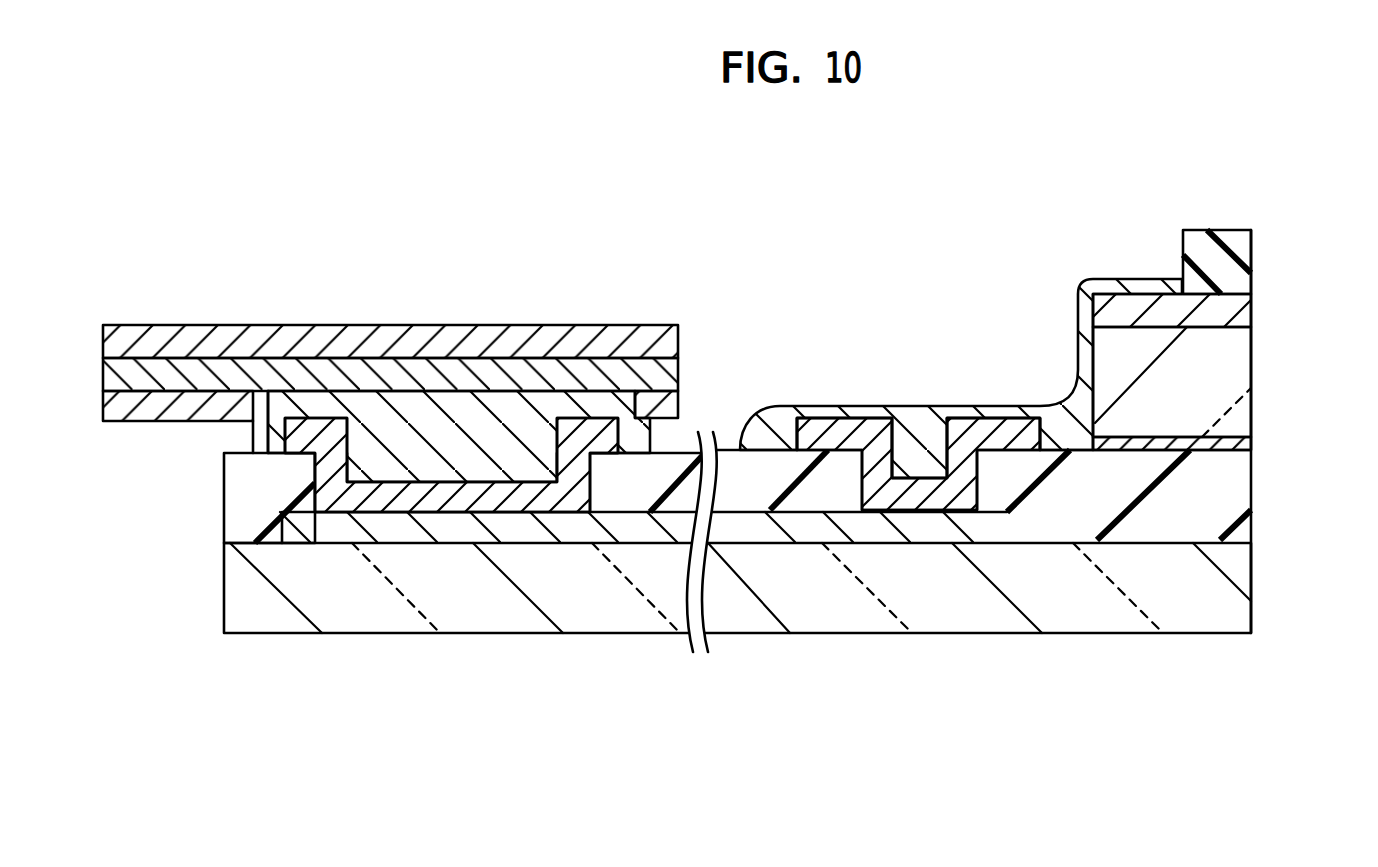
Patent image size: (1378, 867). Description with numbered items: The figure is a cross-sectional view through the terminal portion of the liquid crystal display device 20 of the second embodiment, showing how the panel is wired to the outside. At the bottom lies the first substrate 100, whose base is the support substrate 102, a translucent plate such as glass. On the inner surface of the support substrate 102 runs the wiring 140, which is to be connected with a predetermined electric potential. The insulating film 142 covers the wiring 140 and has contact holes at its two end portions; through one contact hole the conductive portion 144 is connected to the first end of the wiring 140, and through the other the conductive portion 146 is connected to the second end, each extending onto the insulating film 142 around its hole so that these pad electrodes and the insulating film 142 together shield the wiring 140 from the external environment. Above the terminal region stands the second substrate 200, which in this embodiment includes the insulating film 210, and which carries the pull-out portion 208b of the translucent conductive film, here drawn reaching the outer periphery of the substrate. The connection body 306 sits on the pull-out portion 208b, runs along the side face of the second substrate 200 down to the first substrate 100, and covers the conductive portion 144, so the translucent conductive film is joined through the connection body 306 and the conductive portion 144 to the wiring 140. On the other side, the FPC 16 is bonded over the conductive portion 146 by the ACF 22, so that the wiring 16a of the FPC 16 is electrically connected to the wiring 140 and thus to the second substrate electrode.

The liquid crystal display device 20 is at (390, 287).
The FPC 16 is at (390, 319).
The wiring of the FPC 16a is at (308, 368).
The ACF 22 is at (458, 403).
The connection body 306 is at (1110, 287).
The second substrate 200 is at (1235, 297).
The insulating film 210 is at (1242, 255).
The pull-out portion 208b is at (1242, 313).
The support substrate 102 is at (1240, 580).
The first substrate 100 is at (799, 481).
The conductive portion 146 is at (455, 495).
The wiring 140 is at (572, 528).
The insulating film 142 is at (818, 495).
The conductive portion 144 is at (935, 500).